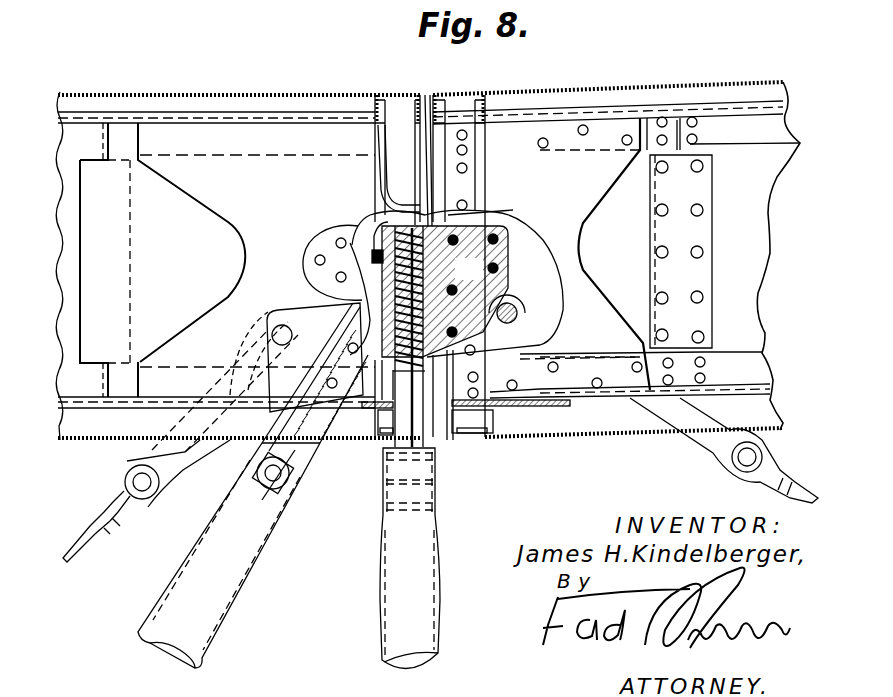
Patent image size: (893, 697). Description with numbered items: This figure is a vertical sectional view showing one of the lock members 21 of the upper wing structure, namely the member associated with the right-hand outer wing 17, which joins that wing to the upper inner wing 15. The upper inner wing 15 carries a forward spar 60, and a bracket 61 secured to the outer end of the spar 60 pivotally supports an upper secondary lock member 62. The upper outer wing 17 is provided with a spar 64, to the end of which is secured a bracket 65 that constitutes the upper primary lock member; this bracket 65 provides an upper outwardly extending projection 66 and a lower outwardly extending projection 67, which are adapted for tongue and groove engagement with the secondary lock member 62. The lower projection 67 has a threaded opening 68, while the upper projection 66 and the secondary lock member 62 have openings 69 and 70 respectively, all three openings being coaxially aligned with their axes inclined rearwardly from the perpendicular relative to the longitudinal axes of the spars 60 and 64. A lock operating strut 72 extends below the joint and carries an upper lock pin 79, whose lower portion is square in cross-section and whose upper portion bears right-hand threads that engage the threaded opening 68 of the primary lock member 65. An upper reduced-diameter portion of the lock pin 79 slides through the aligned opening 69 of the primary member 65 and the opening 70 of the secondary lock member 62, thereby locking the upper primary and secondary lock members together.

The upper inner wing 15 is at (320, 84).
The right-hand outer wing 17 is at (752, 76).
The lock member 21 is at (548, 252).
The forward spar 60 is at (238, 138).
The bracket 61 is at (340, 232).
The upper secondary lock member 62 is at (366, 225).
The spar 64 is at (612, 108).
The bracket 65 is at (522, 232).
The upper projection 66 is at (380, 178).
The lower projection 67 is at (365, 302).
The threaded opening 68 is at (504, 331).
The opening 69 is at (430, 212).
The opening 70 is at (445, 291).
The lock operating strut 72 is at (425, 576).
The upper lock pin 79 is at (423, 427).